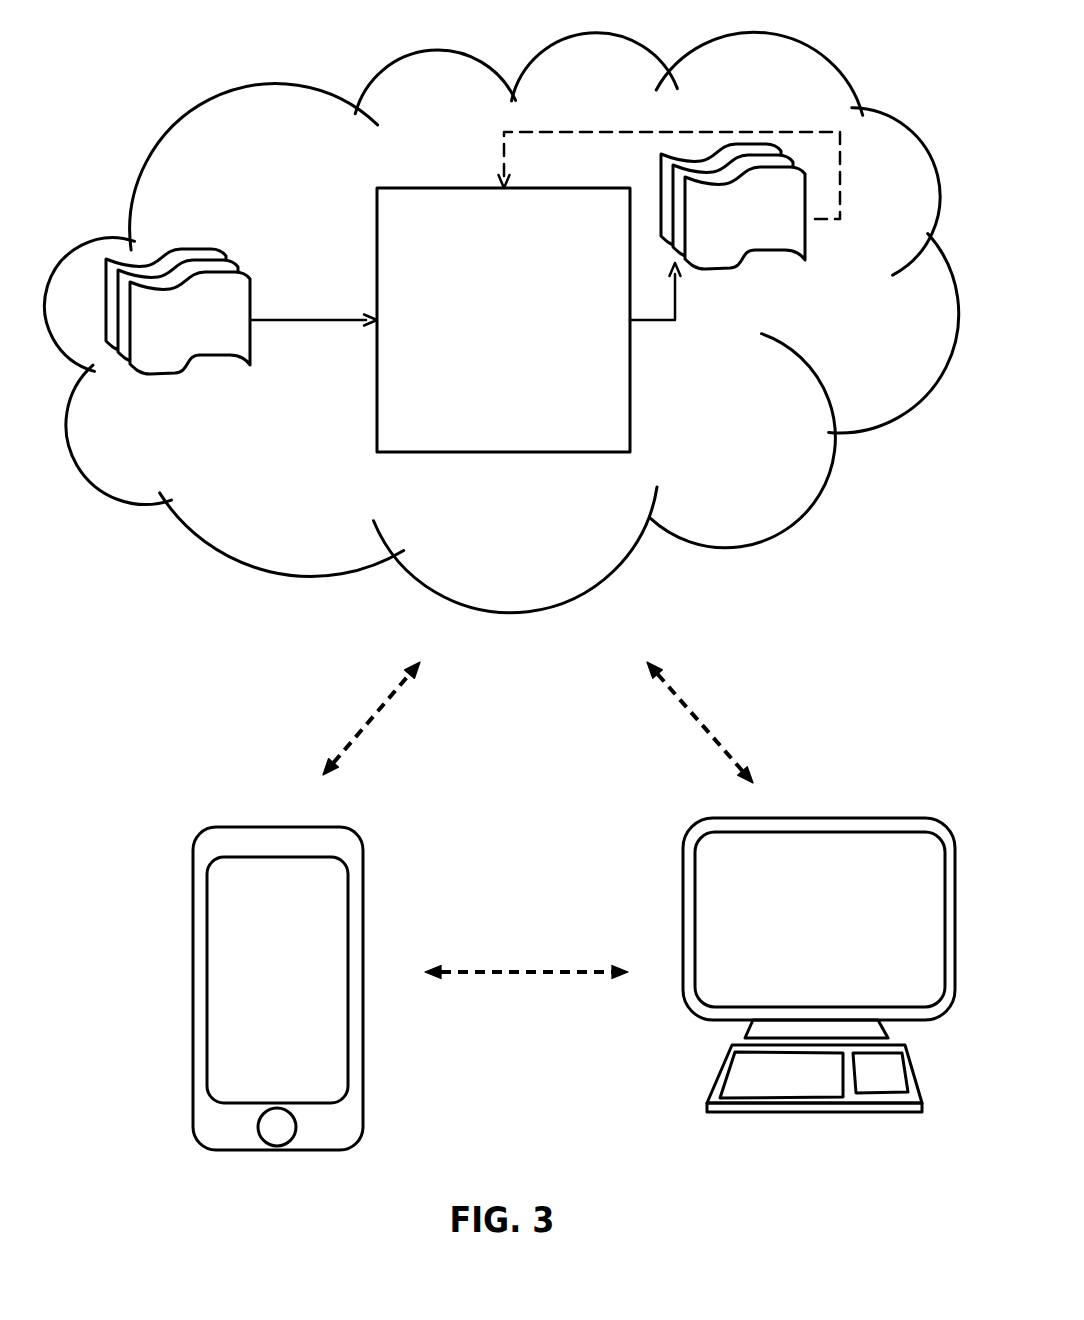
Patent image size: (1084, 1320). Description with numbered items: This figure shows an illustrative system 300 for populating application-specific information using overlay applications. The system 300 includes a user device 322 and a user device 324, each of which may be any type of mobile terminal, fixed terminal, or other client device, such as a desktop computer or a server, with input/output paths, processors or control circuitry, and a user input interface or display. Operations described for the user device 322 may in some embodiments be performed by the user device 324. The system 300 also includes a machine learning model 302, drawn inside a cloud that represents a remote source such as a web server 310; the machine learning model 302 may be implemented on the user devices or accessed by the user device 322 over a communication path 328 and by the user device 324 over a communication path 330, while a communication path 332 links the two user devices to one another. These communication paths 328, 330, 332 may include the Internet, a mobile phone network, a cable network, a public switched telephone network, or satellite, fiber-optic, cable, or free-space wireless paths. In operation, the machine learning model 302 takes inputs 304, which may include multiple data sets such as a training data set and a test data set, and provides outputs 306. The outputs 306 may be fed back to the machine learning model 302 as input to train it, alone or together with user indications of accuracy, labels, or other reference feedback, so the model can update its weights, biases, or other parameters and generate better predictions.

The system 300 is at (502, 576).
The machine learning model 302 is at (545, 292).
The inputs 304 is at (197, 250).
The outputs 306 is at (787, 260).
The web server 310 is at (502, 322).
The user device 322 is at (267, 805).
The user device 324 is at (807, 810).
The communication path 328 is at (343, 690).
The communication path 330 is at (710, 675).
The communication path 332 is at (517, 943).